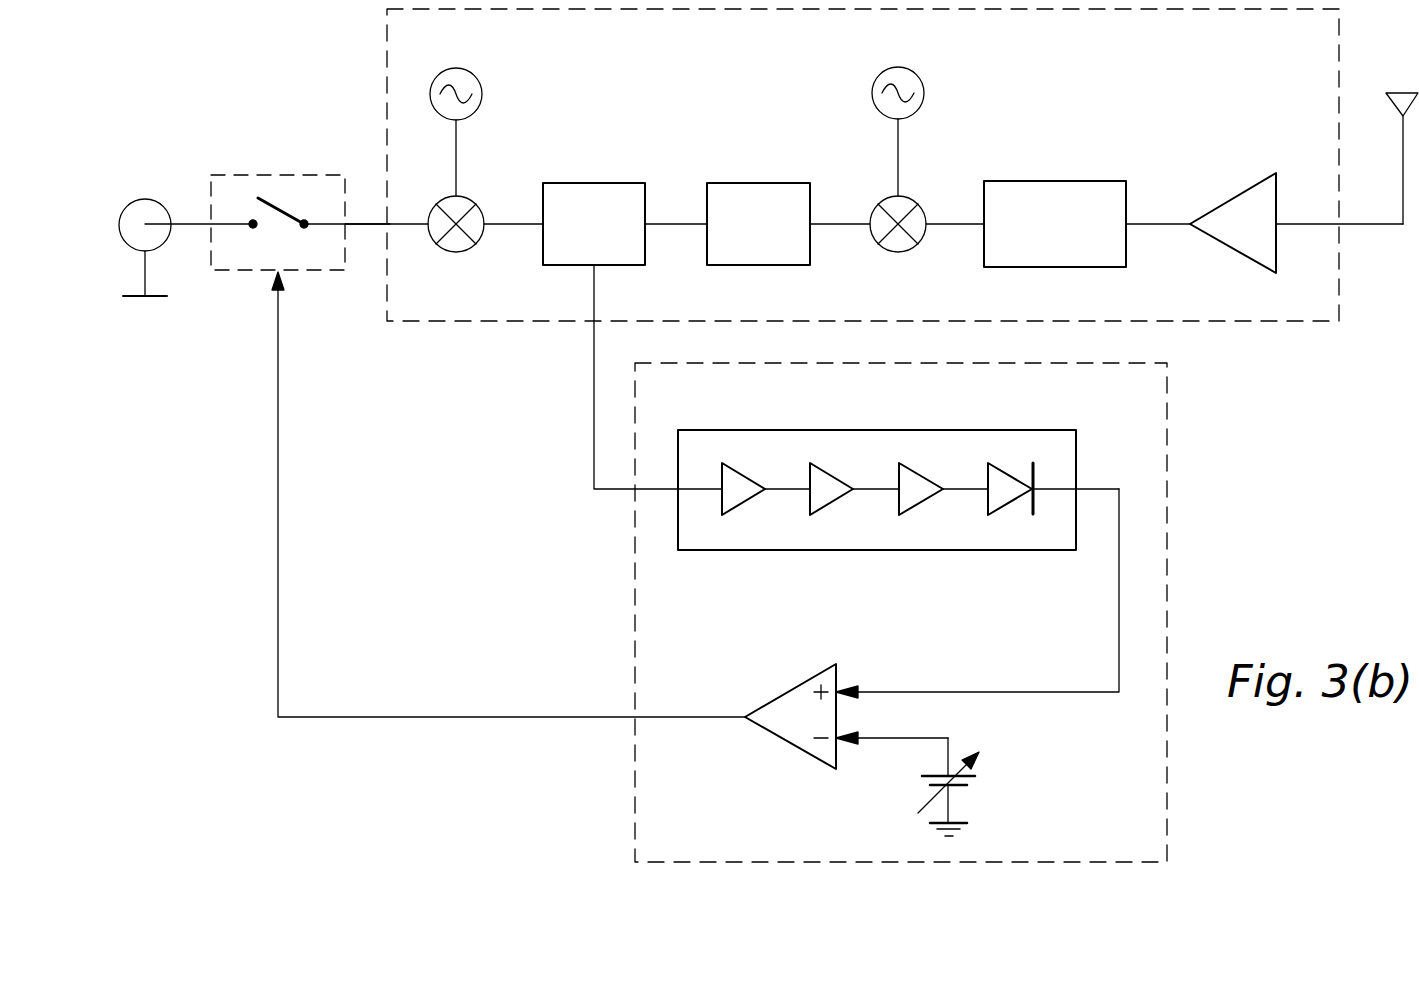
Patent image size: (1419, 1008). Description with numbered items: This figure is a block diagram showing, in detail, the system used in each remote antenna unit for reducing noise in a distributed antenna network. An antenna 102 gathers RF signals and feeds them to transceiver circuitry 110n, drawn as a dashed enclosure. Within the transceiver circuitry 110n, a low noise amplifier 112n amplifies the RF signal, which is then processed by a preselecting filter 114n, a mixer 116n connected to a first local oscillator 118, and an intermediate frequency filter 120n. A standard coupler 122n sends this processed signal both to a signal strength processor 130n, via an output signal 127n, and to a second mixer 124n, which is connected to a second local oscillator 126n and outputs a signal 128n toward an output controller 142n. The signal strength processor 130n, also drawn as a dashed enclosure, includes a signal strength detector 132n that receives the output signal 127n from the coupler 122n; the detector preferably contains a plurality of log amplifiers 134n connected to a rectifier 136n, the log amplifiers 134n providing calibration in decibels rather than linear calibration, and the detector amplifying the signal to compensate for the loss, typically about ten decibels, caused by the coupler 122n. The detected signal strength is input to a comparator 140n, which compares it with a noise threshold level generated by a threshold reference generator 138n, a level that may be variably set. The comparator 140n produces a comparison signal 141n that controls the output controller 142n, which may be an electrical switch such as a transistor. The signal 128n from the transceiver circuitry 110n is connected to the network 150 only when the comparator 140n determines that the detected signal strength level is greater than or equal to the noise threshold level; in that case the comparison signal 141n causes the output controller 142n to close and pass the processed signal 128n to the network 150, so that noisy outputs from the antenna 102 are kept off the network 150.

The network 150 is at (145, 199).
The output controller 142n is at (282, 175).
The signal 128n is at (362, 226).
The transceiver circuitry 110n is at (1254, 323).
The mixer 124n is at (456, 253).
The second local oscillator 126n is at (483, 94).
The coupler 122n is at (594, 183).
The intermediate frequency filter 120n is at (758, 183).
The mixer 116n is at (898, 253).
The first local oscillator 118 is at (925, 92).
The preselecting filter 114n is at (1050, 181).
The low noise amplifier 112n is at (1244, 190).
The antenna 102 is at (1403, 92).
The output signal 127n is at (594, 412).
The signal strength processor 130n is at (1168, 580).
The signal strength detector 132n is at (877, 552).
The log amplifiers 134n is at (840, 448).
The rectifier 136n is at (1008, 468).
The comparator 140n is at (797, 750).
The threshold reference generator 138n is at (990, 782).
The comparison signal 141n is at (453, 720).